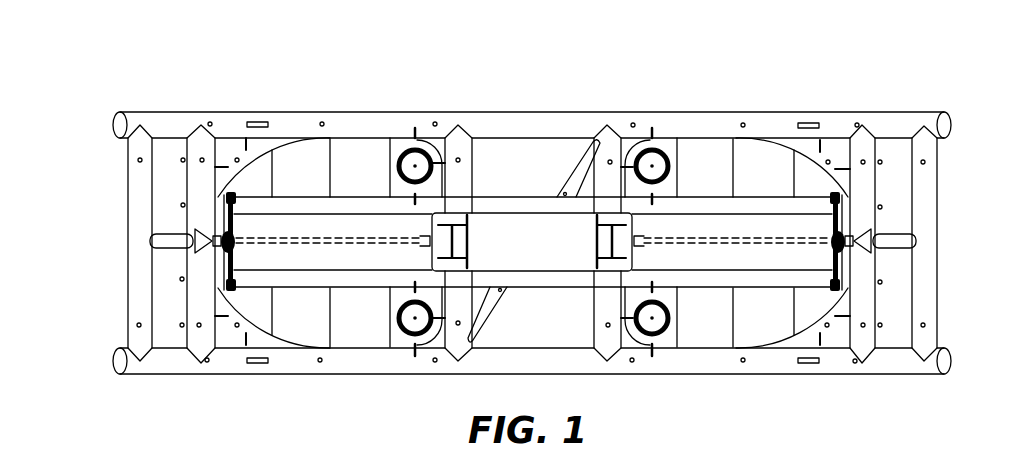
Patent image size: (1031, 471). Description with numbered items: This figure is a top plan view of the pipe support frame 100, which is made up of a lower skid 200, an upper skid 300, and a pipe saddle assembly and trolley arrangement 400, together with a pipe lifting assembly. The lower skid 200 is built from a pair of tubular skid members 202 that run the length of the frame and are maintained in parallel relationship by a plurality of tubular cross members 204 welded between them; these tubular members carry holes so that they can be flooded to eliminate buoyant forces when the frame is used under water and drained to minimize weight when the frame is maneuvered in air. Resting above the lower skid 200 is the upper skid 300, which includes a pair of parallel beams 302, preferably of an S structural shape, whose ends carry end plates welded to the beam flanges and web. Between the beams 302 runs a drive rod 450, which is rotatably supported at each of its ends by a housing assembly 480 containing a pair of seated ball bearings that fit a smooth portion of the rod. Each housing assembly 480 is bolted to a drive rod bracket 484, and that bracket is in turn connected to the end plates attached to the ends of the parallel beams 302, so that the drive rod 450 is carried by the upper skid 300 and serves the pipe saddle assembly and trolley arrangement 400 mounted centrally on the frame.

The pipe support frame 100 is at (776, 68).
The lower skid 200 is at (265, 104).
The tubular skid members 202 is at (548, 115).
The tubular cross members 204 is at (176, 143).
The upper skid 300 is at (805, 148).
The parallel beams 302 is at (348, 197).
The pipe saddle assembly and trolley arrangement 400 is at (507, 220).
The drive rod 450 is at (315, 227).
The housing assembly 480 is at (198, 227).
The drive rod bracket 484 is at (223, 258).